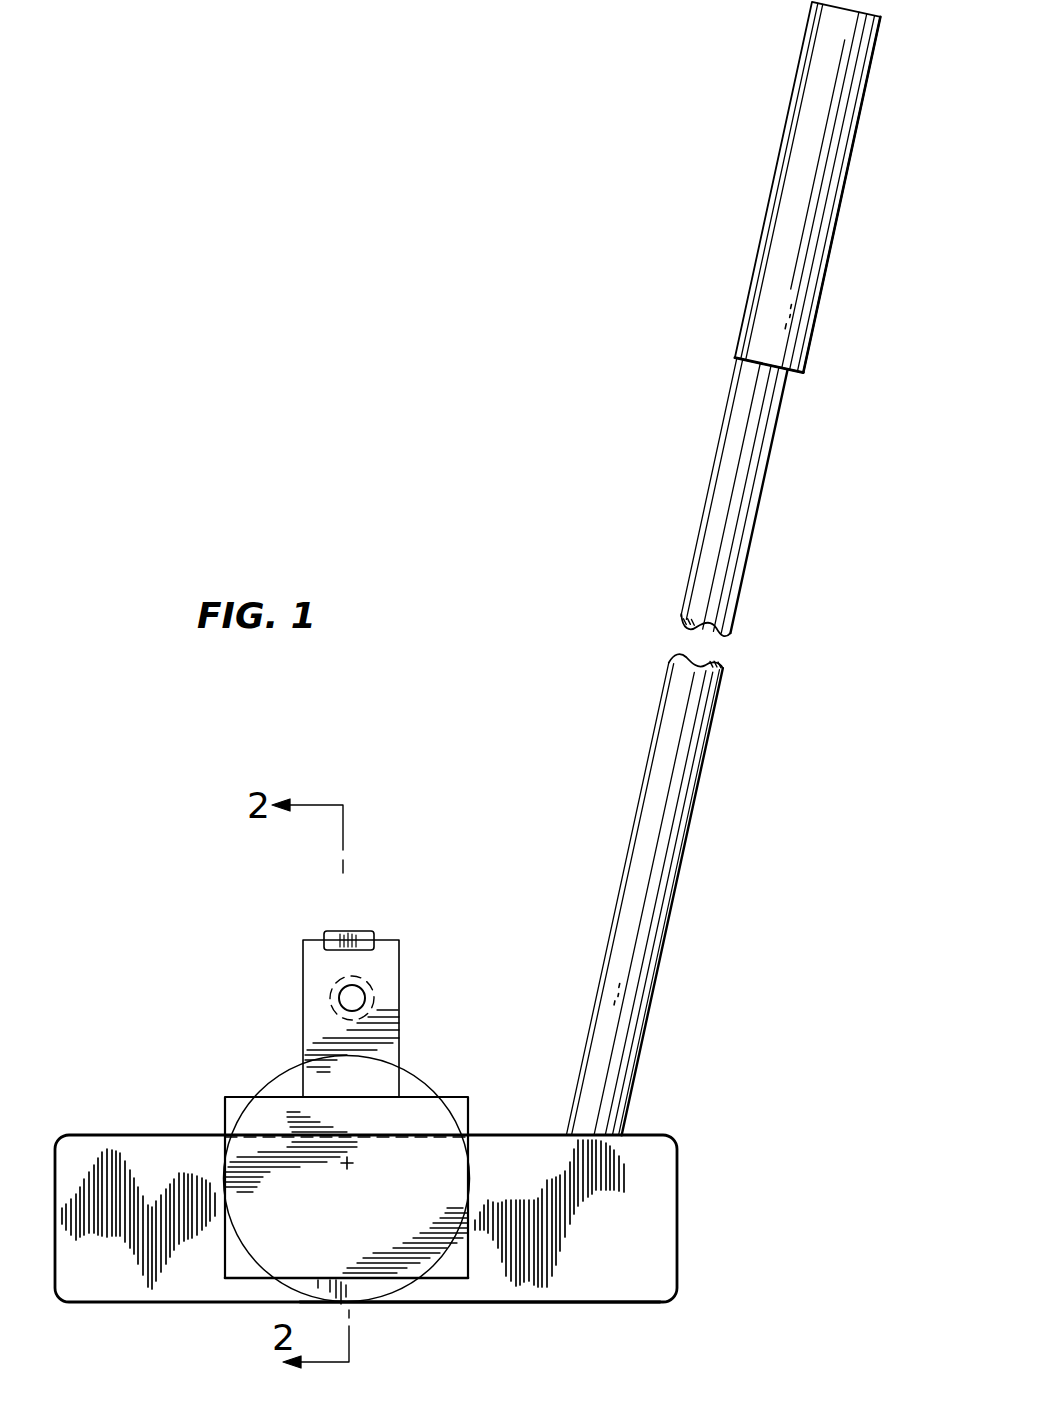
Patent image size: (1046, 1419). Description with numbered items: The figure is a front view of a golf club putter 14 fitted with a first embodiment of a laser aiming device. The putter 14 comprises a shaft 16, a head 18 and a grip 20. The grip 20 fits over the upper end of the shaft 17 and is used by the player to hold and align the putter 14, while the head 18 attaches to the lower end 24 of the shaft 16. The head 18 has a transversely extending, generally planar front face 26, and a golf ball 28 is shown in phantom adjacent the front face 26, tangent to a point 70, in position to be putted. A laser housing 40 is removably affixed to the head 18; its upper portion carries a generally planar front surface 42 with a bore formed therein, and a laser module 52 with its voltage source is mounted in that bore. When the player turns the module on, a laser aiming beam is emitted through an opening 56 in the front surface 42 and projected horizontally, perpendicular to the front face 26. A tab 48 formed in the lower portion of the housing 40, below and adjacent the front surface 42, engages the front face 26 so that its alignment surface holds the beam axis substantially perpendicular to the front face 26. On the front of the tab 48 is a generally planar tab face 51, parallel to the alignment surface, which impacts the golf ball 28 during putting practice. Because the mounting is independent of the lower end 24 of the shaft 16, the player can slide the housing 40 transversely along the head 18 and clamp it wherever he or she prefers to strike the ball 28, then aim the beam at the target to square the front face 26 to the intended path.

The putter 14 is at (580, 618).
The shaft 16 is at (668, 905).
The upper end of the shaft 17 is at (724, 482).
The head 18 is at (678, 1204).
The grip 20 is at (780, 200).
The lower end of the shaft 24 is at (616, 1110).
The front face 26 is at (640, 1273).
The golf ball 28 is at (425, 1082).
The laser housing 40 is at (388, 940).
The front surface 42 is at (318, 950).
The tab 48 is at (225, 1117).
The tab face 51 is at (458, 1265).
The laser module 52 is at (374, 993).
The opening 56 is at (340, 998).
The point 70 is at (350, 1170).